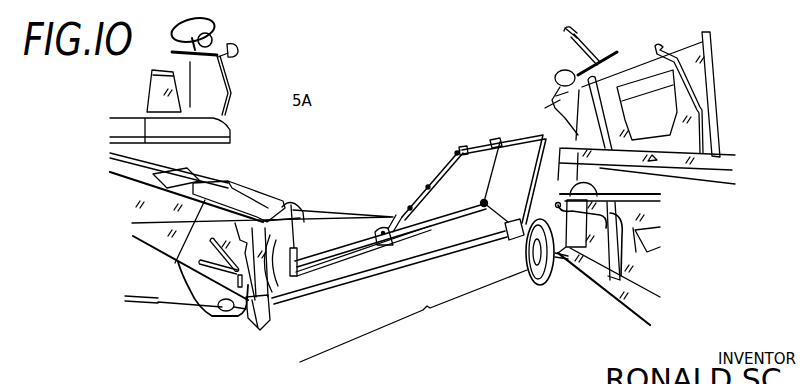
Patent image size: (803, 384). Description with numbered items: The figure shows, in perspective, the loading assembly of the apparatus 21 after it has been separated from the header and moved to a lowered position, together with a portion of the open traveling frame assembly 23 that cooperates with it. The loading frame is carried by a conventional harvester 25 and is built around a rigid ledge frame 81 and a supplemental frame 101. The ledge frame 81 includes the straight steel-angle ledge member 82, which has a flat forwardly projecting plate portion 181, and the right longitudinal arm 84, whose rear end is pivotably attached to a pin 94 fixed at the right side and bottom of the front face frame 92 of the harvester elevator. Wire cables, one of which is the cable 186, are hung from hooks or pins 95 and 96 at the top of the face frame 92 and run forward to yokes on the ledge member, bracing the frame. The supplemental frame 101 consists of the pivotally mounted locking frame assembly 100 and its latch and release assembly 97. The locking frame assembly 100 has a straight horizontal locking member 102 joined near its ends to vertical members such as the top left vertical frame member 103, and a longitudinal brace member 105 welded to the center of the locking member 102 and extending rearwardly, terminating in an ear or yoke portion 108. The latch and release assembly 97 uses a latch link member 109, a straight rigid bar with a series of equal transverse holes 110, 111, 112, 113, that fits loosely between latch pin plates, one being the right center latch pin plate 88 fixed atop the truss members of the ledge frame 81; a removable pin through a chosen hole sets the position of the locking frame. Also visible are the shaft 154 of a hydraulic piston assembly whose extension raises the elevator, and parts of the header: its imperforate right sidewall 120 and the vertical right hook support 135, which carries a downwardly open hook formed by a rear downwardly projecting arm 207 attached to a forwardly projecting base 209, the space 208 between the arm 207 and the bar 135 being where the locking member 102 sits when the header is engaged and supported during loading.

The apparatus 21 is at (500, 373).
The open traveling frame assembly 23 is at (600, 306).
The harvester 25 is at (233, 126).
The ledge frame 81 is at (585, 345).
The ledge member 82 is at (507, 200).
The right longitudinal arm 84 is at (428, 262).
The right center latch pin plate 88 is at (380, 246).
The front face frame 92 is at (268, 190).
The pin 94 is at (257, 321).
The hook or pin 95 is at (294, 206).
The hook or pin 96 is at (250, 214).
The latch and release assembly 97 is at (325, 212).
The locking frame assembly 100 is at (467, 106).
The supplemental frame 101 is at (455, 80).
The horizontal locking member 102 is at (545, 140).
The top left vertical frame member 103 is at (492, 162).
The longitudinal brace member 105 is at (493, 142).
The ear or yoke portion 108 is at (461, 148).
The latch link member 109 is at (444, 160).
The hole 110 is at (385, 227).
The hole 111 is at (392, 212).
The hole 112 is at (400, 200).
The hole 113 is at (408, 207).
The right sidewall 120 is at (665, 133).
The vertical right hook support 135 is at (703, 120).
The shaft 154 is at (200, 307).
The plate portion 181 is at (518, 236).
The wire cable 186 is at (343, 220).
The arm 207 is at (658, 63).
The space 208 is at (662, 84).
The base 209 is at (663, 47).